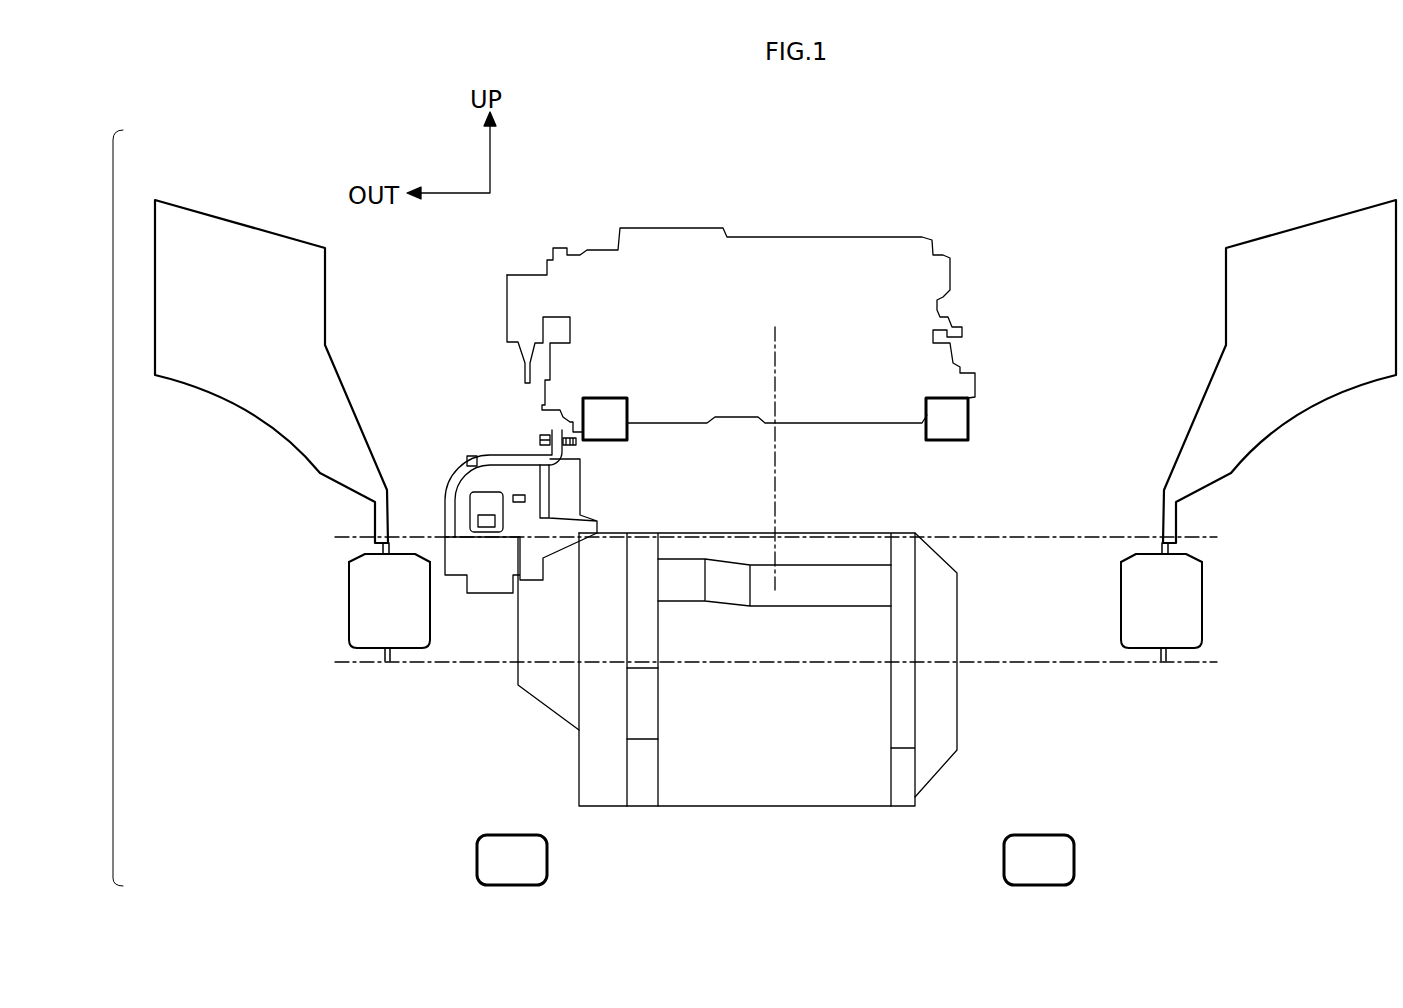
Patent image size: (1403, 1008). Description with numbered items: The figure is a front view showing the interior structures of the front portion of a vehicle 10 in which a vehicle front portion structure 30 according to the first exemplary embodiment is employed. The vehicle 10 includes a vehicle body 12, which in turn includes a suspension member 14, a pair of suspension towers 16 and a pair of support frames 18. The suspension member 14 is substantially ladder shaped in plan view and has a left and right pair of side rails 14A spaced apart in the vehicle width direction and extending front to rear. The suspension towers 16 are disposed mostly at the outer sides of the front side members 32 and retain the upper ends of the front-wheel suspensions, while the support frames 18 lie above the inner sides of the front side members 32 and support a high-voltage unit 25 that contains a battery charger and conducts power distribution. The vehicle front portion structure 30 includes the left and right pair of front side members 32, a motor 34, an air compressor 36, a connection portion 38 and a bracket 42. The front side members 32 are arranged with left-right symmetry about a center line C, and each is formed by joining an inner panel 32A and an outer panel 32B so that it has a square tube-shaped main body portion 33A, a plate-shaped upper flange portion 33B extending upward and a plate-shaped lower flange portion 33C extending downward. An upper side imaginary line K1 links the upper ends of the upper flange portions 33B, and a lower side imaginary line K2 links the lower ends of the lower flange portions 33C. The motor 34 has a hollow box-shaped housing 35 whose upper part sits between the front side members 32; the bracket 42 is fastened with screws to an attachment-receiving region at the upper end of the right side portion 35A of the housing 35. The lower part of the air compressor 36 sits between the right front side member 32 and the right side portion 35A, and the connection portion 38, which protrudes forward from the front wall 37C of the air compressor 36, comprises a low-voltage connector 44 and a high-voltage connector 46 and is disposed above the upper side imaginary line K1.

The vehicle 10 is at (1145, 170).
The vehicle body 12 is at (1280, 460).
The suspension member 14 is at (829, 831).
The side rails 14A is at (505, 832).
The suspension towers 16 is at (775, 371).
The support frames 18 is at (608, 395).
The high-voltage unit 25 is at (760, 232).
The vehicle front portion structure 30 is at (532, 485).
The front side members 32 is at (775, 594).
The inner panel 32A is at (430, 615).
The outer panel 32B is at (347, 598).
The main body portion 33A is at (347, 622).
The upper flange portion 33B is at (385, 548).
The lower flange portion 33C is at (392, 652).
The motor 34 is at (735, 684).
The housing 35 is at (810, 808).
The right side portion 35A is at (545, 706).
The air compressor 36 is at (510, 520).
The front wall 37C is at (555, 472).
The connection portion 38 is at (470, 518).
The bracket 42 is at (456, 477).
The low-voltage connector 44 is at (518, 492).
The high-voltage connector 46 is at (487, 528).
The center line C is at (780, 347).
The upper side imaginary line K1 is at (1040, 535).
The lower side imaginary line K2 is at (1060, 665).